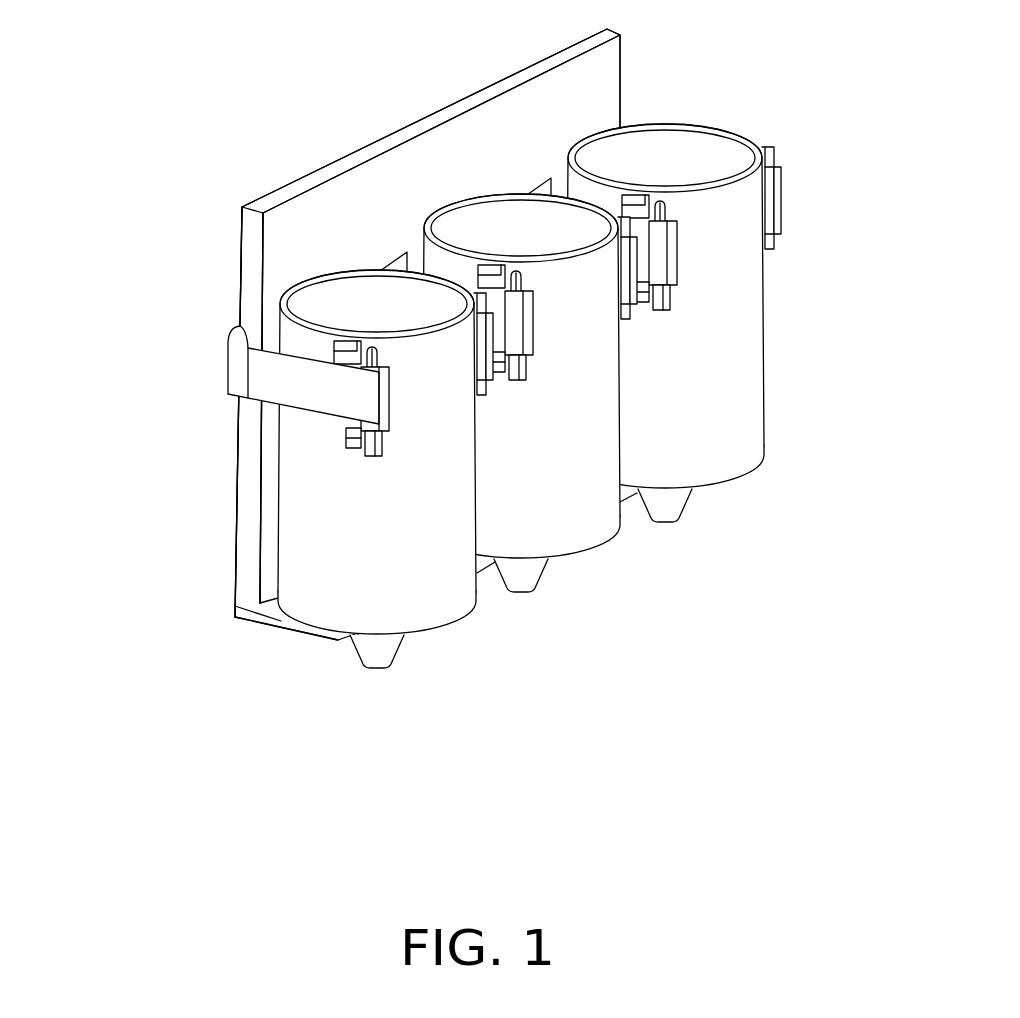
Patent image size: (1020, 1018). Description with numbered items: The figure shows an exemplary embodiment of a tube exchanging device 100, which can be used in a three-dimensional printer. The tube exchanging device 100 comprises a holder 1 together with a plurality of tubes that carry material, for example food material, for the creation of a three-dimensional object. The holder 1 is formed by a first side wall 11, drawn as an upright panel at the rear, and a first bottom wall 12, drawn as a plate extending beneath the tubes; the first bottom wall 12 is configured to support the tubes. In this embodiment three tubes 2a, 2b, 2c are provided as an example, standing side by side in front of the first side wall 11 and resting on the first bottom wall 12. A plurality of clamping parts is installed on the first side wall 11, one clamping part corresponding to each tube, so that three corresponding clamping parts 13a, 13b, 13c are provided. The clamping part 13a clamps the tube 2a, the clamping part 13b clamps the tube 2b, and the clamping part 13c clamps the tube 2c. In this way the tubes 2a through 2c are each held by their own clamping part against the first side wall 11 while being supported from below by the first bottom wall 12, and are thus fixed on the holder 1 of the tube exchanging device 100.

The tube exchanging device 100 is at (372, 98).
The holder 1 is at (157, 270).
The first side wall 11 is at (287, 261).
The first bottom wall 12 is at (236, 609).
The clamping part 13a is at (365, 398).
The clamping part 13b is at (508, 332).
The clamping part 13c is at (782, 200).
The tube 2a is at (422, 600).
The tube 2b is at (580, 530).
The tube 2c is at (703, 453).